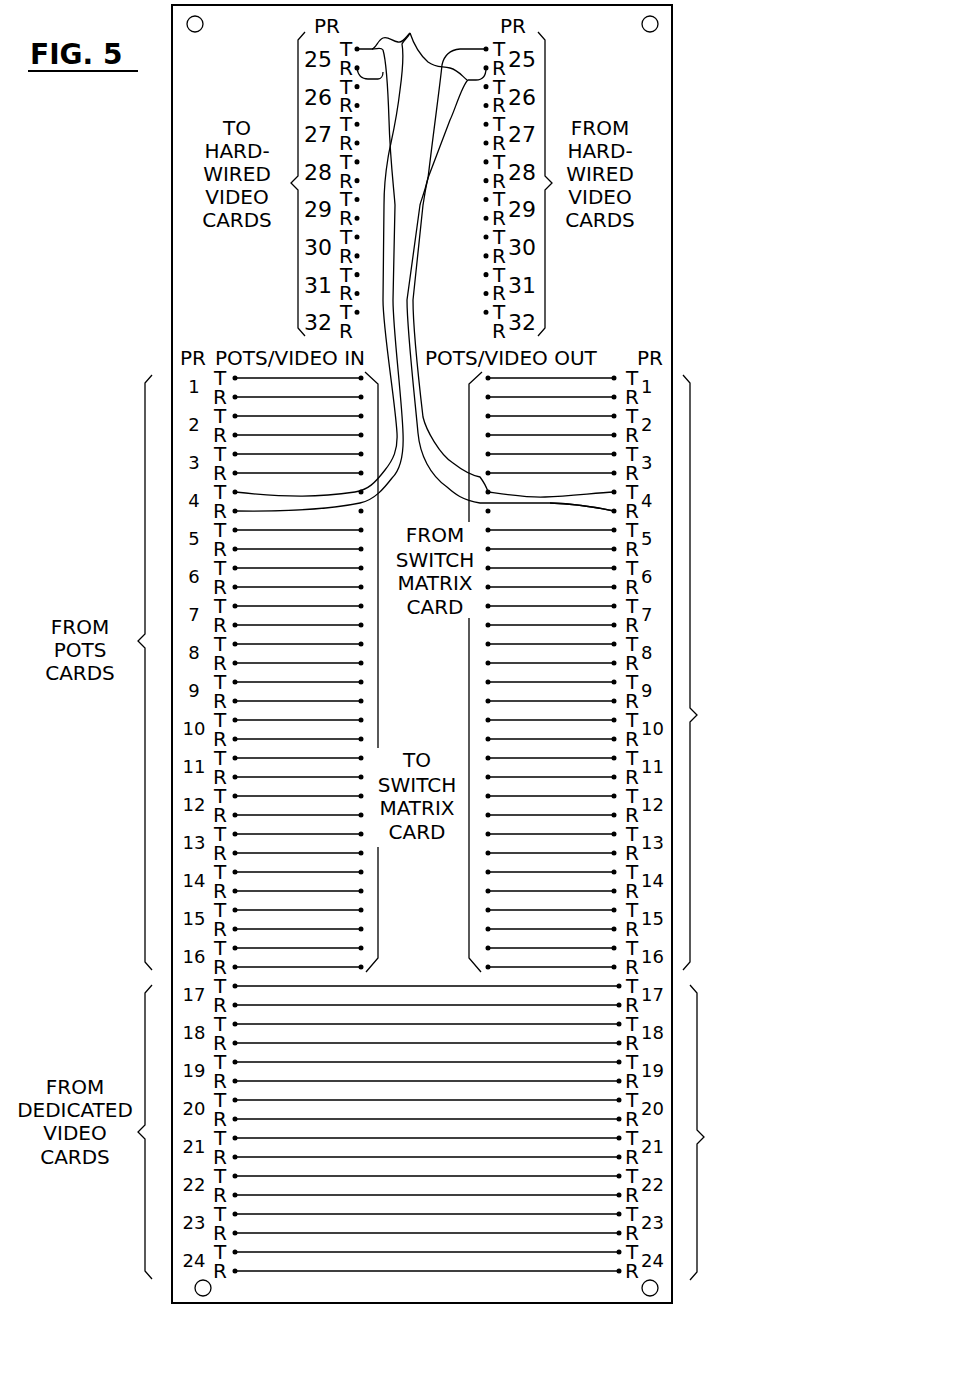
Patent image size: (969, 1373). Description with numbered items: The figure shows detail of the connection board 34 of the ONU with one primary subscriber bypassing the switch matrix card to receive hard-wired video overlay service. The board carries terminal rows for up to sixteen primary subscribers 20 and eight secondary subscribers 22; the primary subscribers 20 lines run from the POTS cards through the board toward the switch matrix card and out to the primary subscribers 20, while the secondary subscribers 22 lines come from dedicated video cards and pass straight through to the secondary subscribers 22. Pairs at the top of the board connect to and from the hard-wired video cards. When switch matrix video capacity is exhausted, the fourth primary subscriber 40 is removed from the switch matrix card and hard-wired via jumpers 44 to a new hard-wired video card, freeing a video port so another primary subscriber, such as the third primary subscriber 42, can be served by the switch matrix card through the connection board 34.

The primary subscribers 20 is at (659, 672).
The secondary subscribers 22 is at (788, 1074).
The connection board 34 is at (672, 77).
The primary subscriber #4 40 is at (655, 502).
The primary subscriber #3 42 is at (655, 463).
The jumpers 44 is at (424, 261).